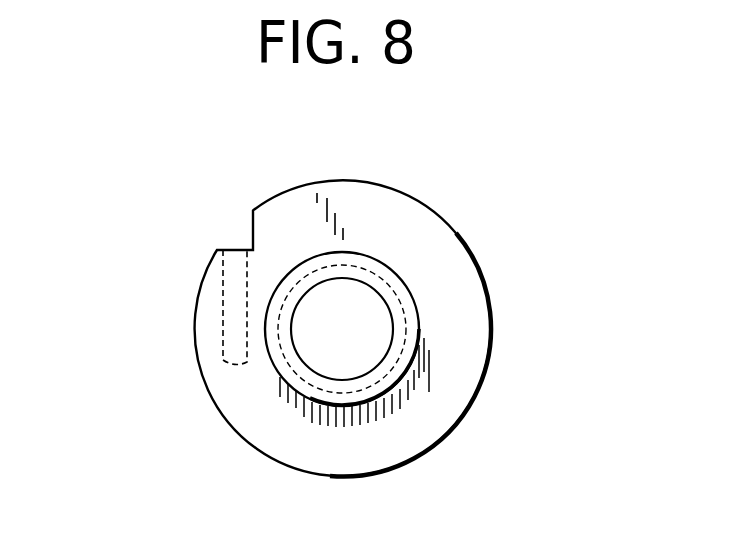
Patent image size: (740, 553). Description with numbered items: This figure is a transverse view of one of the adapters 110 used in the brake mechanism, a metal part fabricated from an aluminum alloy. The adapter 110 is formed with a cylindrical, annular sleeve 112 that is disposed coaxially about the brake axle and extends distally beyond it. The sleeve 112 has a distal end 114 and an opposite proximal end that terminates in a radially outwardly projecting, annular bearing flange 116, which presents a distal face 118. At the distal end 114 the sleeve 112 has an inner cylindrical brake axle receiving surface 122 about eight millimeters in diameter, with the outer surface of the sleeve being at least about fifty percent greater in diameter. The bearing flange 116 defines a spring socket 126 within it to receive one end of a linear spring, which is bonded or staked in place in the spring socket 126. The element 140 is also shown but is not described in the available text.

The body 110 is at (463, 222).
The central bore 112 is at (421, 319).
The annular rim 114 is at (407, 387).
The outer wall 116 is at (205, 383).
The face 118 is at (352, 455).
The bore edge 122 is at (343, 379).
The slot 126 is at (224, 290).
The collar 140 is at (341, 272).